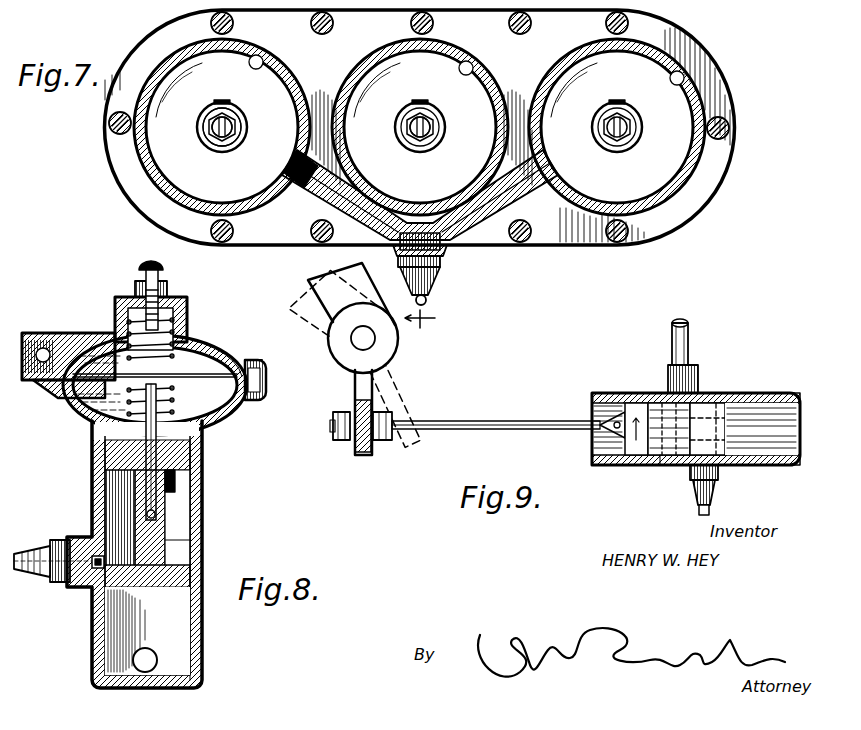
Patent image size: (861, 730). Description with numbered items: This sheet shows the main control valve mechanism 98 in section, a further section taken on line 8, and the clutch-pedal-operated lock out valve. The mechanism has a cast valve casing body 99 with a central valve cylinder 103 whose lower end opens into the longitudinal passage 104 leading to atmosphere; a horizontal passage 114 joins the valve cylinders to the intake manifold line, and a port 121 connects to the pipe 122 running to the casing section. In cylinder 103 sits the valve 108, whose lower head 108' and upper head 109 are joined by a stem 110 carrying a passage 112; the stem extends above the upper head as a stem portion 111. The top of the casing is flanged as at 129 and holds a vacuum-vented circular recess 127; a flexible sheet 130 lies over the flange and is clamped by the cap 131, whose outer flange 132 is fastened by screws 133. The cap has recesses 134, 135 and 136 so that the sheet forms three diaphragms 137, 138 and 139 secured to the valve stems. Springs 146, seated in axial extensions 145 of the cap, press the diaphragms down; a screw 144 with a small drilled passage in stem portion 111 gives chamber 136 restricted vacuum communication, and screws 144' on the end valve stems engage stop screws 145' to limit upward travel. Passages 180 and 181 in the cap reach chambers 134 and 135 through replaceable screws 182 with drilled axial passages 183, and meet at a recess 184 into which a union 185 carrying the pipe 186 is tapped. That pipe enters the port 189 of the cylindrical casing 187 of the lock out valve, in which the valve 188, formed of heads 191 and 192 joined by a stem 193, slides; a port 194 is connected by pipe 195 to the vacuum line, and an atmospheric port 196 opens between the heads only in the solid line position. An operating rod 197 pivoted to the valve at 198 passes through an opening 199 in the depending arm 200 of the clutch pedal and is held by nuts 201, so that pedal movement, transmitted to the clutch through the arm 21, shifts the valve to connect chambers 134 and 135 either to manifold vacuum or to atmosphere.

In FIG. 7, the section line 8— 8 is at (420, 330).
In FIG. 8, the arm 21 is at (312, 288).
In FIG. 7, the main control valve mechanism 98 is at (108, 160).
In FIG. 8, the main control valve mechanism 98 is at (87, 463).
In FIG. 8, the valve casing body 99 is at (204, 490).
In FIG. 8, the valve cylinder 103 is at (182, 514).
In FIG. 8, the longitudinal passage 104 is at (156, 660).
In FIG. 8, the valve 108 is at (175, 566).
In FIG. 8, the lower head 108' is at (147, 631).
In FIG. 8, the upper head 109 is at (179, 485).
In FIG. 8, the stem 110 is at (192, 530).
In FIG. 8, the stem portion 111 is at (104, 451).
In FIG. 8, the longitudinal passage 112 is at (140, 492).
In FIG. 8, the longitudinal passage 114 is at (135, 478).
In FIG. 8, the port 121 is at (96, 568).
In FIG. 8, the pipe 122 is at (20, 570).
In FIG. 8, the circular recess 127 is at (228, 414).
In FIG. 8, the flange 129 is at (48, 398).
In FIG. 8, the flexible sheet 130 is at (266, 378).
In FIG. 7, the cap 131 is at (156, 48).
In FIG. 8, the cap 131 is at (219, 343).
In FIG. 8, the outer flange 132 is at (262, 370).
In FIG. 7, the screws 133 is at (109, 124).
In FIG. 8, the screws 133 is at (255, 360).
In FIG. 7, the circular recess 134 is at (258, 56).
In FIG. 7, the circular recess 135 is at (680, 72).
In FIG. 7, the circular recess 136 is at (468, 62).
In FIG. 7, the diaphragm 137 is at (222, 127).
In FIG. 7, the diaphragm 138 is at (617, 127).
In FIG. 7, the diaphragm 139 is at (420, 127).
In FIG. 7, the screw 144 is at (396, 141).
In FIG. 8, the screw 144 is at (180, 452).
In FIG. 7, the screws 144' is at (196, 126).
In FIG. 8, the axial extensions 145 is at (175, 328).
In FIG. 8, the screws 145' is at (129, 295).
In FIG. 7, the springs 146 is at (236, 112).
In FIG. 8, the springs 146 is at (168, 366).
In FIG. 7, the passage 180 is at (330, 214).
In FIG. 8, the passage 180 is at (78, 334).
In FIG. 7, the passage 181 is at (520, 210).
In FIG. 7, the screws 182 is at (304, 158).
In FIG. 7, the drilled axial passages 183 is at (296, 168).
In FIG. 7, the recess 184 is at (440, 252).
In FIG. 8, the recess 184 is at (42, 333).
In FIG. 7, the union 185 is at (440, 276).
In FIG. 7, the pipe 186 is at (430, 302).
In FIG. 9, the pipe 186 is at (690, 336).
In FIG. 9, the cylindrical casing 187 is at (745, 395).
In FIG. 9, the valve 188 is at (640, 460).
In FIG. 9, the port 189 is at (700, 402).
In FIG. 9, the head 191 is at (630, 402).
In FIG. 9, the head 192 is at (742, 430).
In FIG. 9, the stem 193 is at (660, 466).
In FIG. 9, the port 194 is at (722, 470).
In FIG. 9, the pipe 195 is at (698, 508).
In FIG. 9, the atmospheric port 196 is at (656, 402).
In FIG. 9, the operating rod 197 is at (496, 420).
In FIG. 9, the pivotal connection 198 is at (612, 428).
In FIG. 8, the opening 199 is at (362, 452).
In FIG. 8, the depending arm 200 is at (356, 396).
In FIG. 8, the nuts 201 is at (345, 440).